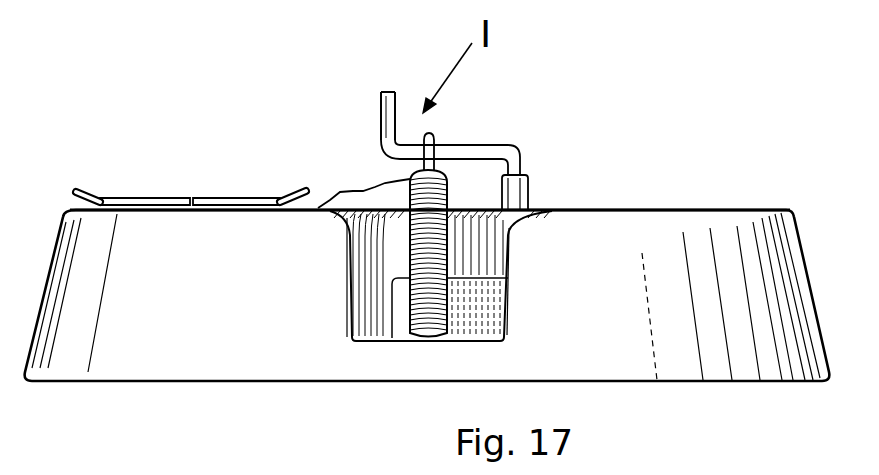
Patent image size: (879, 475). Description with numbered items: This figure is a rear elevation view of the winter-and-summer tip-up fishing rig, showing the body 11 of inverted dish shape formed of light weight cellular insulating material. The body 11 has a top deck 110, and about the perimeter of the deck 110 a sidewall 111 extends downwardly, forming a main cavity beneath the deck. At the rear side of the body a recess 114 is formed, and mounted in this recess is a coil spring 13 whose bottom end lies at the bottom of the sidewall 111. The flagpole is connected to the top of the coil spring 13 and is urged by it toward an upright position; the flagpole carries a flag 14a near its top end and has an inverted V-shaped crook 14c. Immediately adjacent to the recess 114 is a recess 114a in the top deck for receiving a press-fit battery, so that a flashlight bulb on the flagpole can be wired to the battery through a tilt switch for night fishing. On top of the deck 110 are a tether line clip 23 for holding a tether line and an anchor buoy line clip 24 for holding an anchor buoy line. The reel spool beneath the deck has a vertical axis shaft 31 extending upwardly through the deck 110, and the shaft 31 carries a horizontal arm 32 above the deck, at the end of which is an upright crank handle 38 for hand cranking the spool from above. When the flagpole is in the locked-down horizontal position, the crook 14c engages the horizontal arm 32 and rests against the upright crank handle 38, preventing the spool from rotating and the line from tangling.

The body 11 is at (690, 196).
The top deck 110 is at (628, 211).
The sidewall 111 is at (618, 350).
The recess 114 is at (363, 257).
The recess 114a is at (493, 233).
The coil spring 13 is at (410, 315).
The flag 14a is at (364, 190).
The inverted V-shaped crook 14c is at (436, 137).
The tether line clip 23 is at (100, 196).
The anchor buoy line clip 24 is at (266, 196).
The vertical axis shaft 31 is at (528, 168).
The horizontal arm 32 is at (483, 145).
The upright crank handle 38 is at (381, 93).